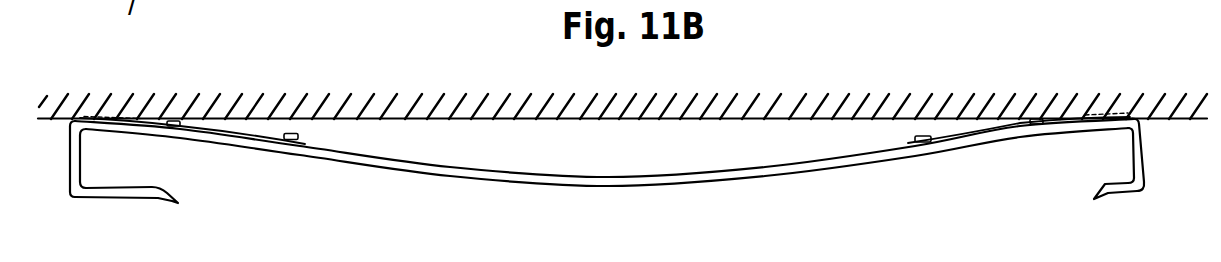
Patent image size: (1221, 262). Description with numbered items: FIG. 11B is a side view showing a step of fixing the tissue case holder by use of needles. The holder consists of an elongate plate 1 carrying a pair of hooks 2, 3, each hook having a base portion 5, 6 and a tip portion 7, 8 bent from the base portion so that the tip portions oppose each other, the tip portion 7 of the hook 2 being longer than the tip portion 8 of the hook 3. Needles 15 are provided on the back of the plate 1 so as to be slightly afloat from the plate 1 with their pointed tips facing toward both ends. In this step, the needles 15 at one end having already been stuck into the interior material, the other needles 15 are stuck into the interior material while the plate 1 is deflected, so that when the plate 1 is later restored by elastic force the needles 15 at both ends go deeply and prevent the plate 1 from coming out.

The plate 1 is at (609, 187).
The hook 2 is at (105, 182).
The hook 3 is at (1145, 190).
The base portion 5 is at (78, 155).
The base portion 6 is at (1141, 153).
The tip portion 7 is at (134, 195).
The tip portion 8 is at (1120, 193).
The needles 15 is at (144, 118).